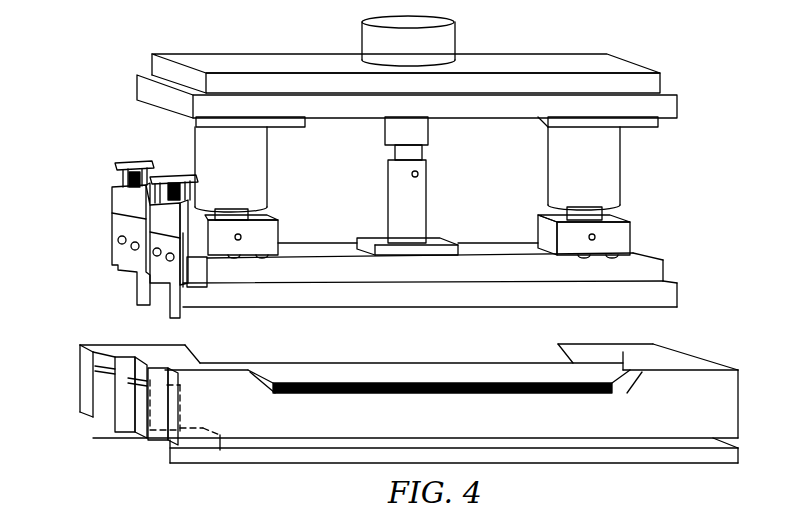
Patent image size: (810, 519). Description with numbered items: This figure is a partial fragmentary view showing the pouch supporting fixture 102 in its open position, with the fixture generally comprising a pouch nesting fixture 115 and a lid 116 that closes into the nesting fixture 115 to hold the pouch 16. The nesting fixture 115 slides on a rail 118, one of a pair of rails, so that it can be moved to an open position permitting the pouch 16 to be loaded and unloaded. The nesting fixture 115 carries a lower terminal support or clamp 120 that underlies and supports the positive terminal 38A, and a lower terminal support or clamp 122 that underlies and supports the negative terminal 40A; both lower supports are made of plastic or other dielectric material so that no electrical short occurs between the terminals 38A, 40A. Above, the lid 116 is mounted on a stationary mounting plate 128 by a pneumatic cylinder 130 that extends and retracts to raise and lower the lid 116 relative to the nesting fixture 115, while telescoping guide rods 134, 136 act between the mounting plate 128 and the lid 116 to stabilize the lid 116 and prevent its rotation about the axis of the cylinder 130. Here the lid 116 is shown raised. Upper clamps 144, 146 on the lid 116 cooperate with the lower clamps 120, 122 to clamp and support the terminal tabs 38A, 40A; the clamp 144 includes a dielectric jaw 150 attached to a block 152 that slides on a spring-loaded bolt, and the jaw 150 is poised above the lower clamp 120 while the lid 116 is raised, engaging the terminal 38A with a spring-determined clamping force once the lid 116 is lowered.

The pouch supporting fixture 102 is at (420, 63).
The stationary mounting plate 128 is at (557, 58).
The telescoping guide rod 134 is at (257, 176).
The pneumatic cylinder 130 is at (417, 203).
The telescoping guide rod 136 is at (603, 178).
The lid 116 is at (668, 270).
The block 152 is at (177, 170).
The upper clamp 144 is at (112, 238).
The upper clamp 146 is at (120, 295).
The jaw 150 is at (153, 307).
The pouch nesting fixture 115 is at (418, 370).
The pouch 16 is at (416, 365).
The lower terminal support or clamp 122 is at (123, 403).
The lower terminal support or clamp 120 is at (133, 437).
The negative terminal 40A is at (110, 365).
The positive terminal 38A is at (125, 380).
The rail 118 is at (657, 455).